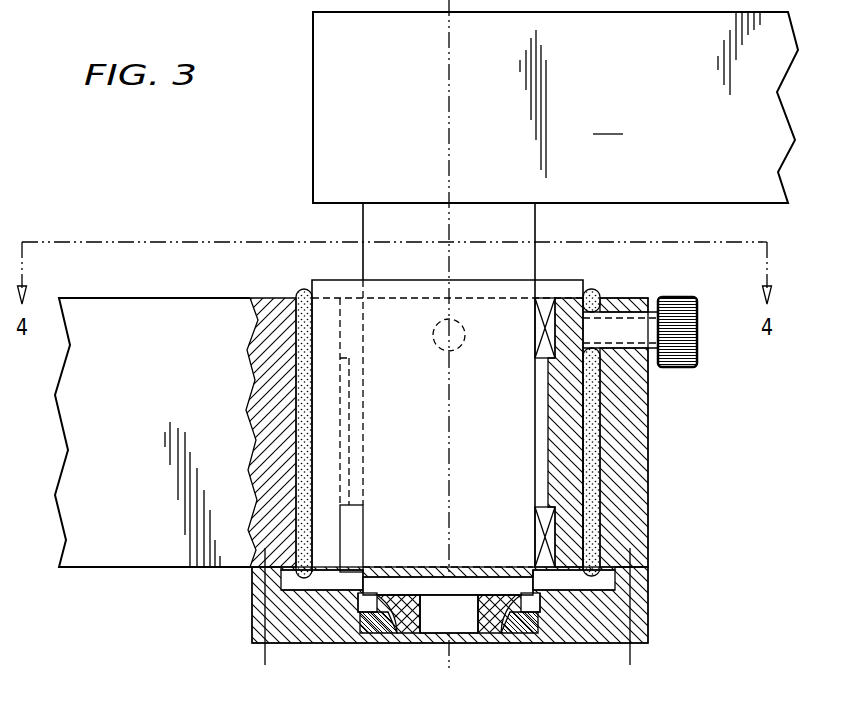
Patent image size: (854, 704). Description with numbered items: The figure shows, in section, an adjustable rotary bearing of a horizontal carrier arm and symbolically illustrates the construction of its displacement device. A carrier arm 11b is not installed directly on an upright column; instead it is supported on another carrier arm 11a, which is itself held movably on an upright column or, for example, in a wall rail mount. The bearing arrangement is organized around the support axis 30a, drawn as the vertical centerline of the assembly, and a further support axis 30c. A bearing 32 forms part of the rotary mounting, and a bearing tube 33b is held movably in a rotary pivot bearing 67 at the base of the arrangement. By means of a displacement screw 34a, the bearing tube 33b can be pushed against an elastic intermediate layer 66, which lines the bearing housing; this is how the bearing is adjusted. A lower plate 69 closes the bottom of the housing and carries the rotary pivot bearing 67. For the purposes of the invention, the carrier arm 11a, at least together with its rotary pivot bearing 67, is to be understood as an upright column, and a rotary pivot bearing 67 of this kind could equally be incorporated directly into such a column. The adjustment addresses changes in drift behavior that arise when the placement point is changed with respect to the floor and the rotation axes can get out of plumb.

The carrier arm 11a is at (155, 415).
The carrier arm 11b is at (625, 468).
The support axis 30a is at (449, 117).
The support axis 30c is at (377, 228).
The bearing 32 is at (545, 322).
The bearing tube 33b is at (565, 429).
The displacement screw 34a is at (685, 298).
The elastic intermediate layer 66 is at (300, 322).
The rotary pivot bearing 67 is at (522, 635).
The bottom plate 69 is at (275, 608).